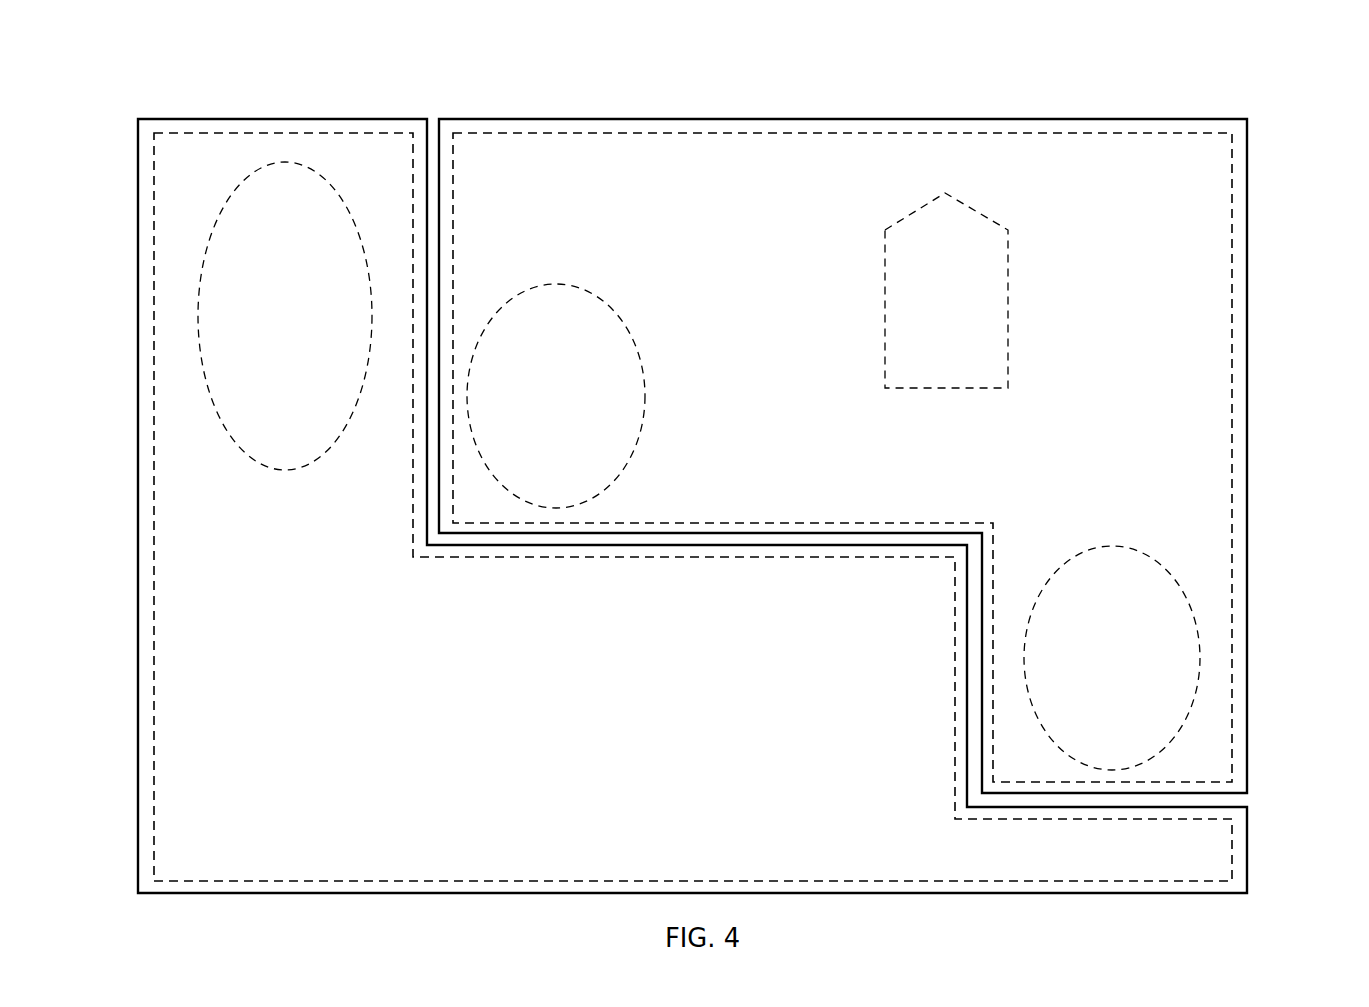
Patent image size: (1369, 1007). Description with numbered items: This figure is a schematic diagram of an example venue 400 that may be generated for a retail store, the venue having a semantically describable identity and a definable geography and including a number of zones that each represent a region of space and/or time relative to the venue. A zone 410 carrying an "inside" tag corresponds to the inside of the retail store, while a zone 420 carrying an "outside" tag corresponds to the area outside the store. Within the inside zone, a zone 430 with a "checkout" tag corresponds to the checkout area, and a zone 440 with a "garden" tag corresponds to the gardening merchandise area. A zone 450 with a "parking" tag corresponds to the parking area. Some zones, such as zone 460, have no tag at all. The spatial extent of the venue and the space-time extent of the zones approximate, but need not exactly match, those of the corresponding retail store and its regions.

The venue 400 is at (1128, 82).
The zone with inside tag 410 is at (1232, 190).
The zone with outside tag 420 is at (1232, 850).
The zone with checkout tag 430 is at (645, 393).
The zone with garden tag 440 is at (1201, 656).
The zone with parking tag 450 is at (302, 468).
The zone with no tag 460 is at (1008, 288).